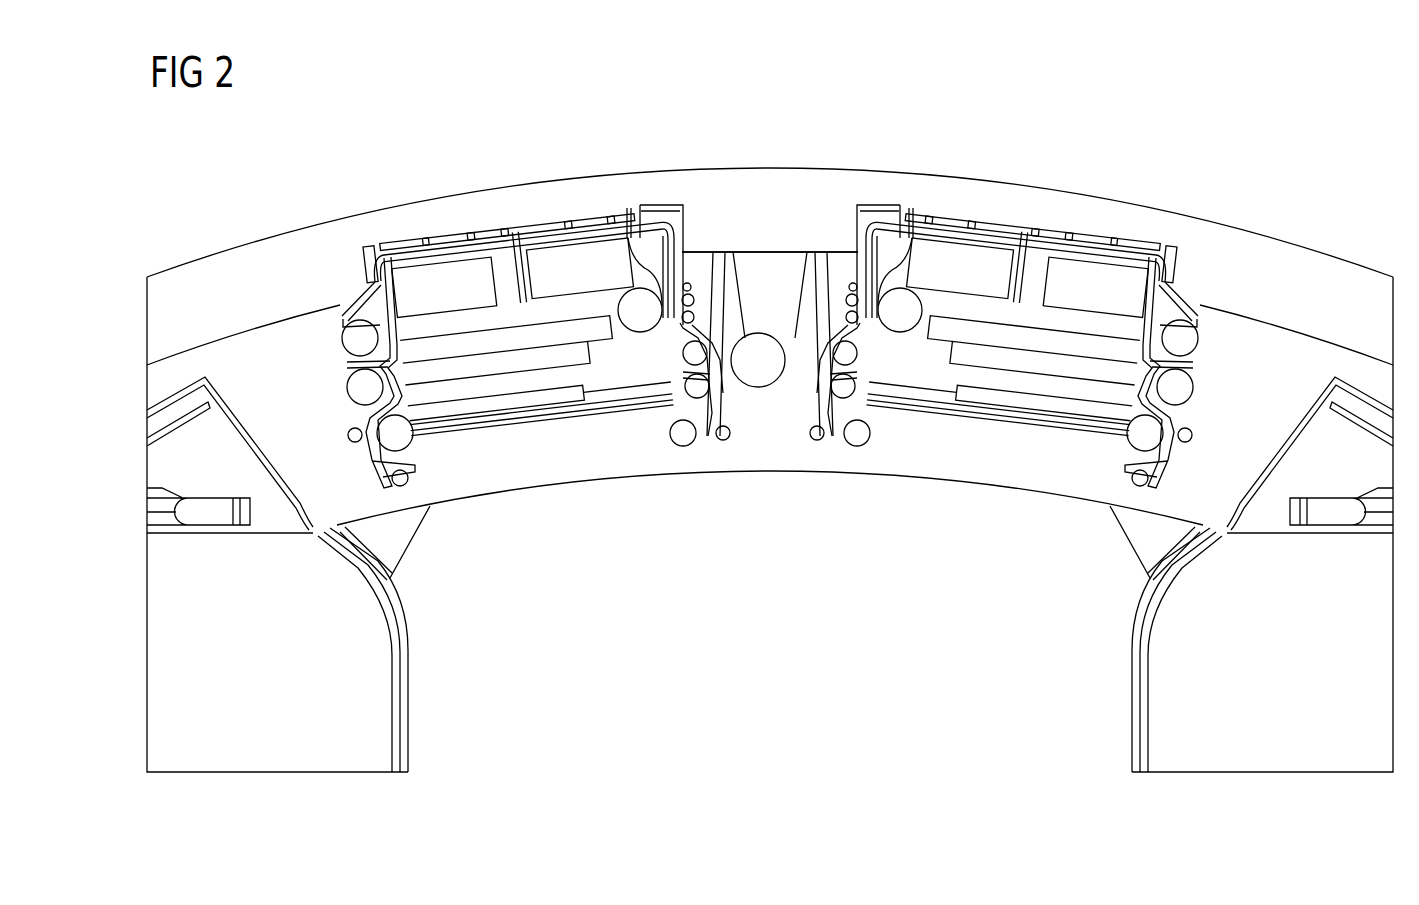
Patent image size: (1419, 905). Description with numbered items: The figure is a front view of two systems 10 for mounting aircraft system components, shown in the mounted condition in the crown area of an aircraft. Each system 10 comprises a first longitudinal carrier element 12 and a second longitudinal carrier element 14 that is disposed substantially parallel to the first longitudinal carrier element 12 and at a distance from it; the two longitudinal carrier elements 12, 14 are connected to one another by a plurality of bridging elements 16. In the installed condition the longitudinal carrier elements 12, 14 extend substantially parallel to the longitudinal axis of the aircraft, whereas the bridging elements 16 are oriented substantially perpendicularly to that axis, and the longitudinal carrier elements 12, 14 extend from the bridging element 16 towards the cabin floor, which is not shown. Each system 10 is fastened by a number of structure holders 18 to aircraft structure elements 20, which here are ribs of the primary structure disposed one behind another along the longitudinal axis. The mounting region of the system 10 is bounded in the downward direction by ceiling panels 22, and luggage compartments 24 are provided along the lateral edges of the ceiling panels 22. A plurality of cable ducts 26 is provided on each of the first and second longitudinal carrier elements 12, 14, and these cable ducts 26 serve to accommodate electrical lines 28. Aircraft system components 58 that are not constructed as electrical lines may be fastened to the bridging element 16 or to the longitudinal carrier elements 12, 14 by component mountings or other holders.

The system 10 is at (252, 205).
The first longitudinal carrier element 12 is at (367, 455).
The second longitudinal carrier element 14 is at (717, 413).
The bridging element 16 is at (460, 240).
The structure holder 18 is at (386, 246).
The aircraft structure element 20 is at (788, 178).
The ceiling panel 22 is at (878, 485).
The luggage compartment 24 is at (291, 772).
The cable duct 26 is at (332, 385).
The electrical line 28 is at (672, 440).
The aircraft system component 58 is at (516, 337).